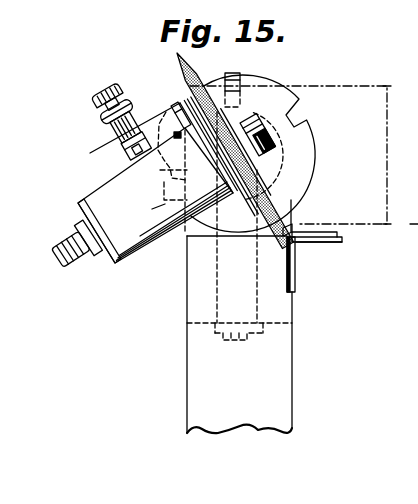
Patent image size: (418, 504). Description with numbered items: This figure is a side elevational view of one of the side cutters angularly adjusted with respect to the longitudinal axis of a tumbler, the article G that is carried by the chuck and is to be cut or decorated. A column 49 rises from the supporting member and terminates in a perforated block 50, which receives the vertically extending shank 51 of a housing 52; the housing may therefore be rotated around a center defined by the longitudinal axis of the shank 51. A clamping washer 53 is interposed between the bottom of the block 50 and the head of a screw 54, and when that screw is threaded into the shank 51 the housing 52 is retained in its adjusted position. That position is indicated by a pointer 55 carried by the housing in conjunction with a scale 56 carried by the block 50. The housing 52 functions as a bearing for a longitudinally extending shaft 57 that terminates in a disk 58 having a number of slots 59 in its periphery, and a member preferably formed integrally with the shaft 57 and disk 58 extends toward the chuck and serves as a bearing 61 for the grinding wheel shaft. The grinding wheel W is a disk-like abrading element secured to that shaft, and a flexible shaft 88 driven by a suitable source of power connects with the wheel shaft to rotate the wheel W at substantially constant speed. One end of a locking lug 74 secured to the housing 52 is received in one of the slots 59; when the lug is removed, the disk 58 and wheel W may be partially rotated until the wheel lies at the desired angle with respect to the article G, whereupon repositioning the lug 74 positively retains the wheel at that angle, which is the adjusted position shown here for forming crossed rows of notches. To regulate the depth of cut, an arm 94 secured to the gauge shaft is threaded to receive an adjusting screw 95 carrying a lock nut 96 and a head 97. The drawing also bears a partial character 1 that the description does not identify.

The column 49 is at (280, 388).
The perforated block 50 is at (282, 307).
The shank 51 is at (215, 293).
The housing 52 is at (311, 217).
The clamping washer 53 is at (263, 333).
The screw 54 is at (228, 338).
The pointer 55 is at (333, 234).
The scale 56 is at (340, 243).
The shaft 57 is at (291, 168).
The disk 58 is at (299, 140).
The slots 59 is at (185, 105).
The bearing 61 is at (153, 250).
The locking lug 74 is at (248, 70).
The flexible shaft 88 is at (84, 264).
The arm 94 is at (117, 150).
The adjusting screw 95 is at (142, 160).
The lock nut 96 is at (105, 127).
The head 97 is at (93, 107).
The grinding wheel W is at (176, 62).
The article G is at (383, 132).
The frame 1 is at (414, 215).